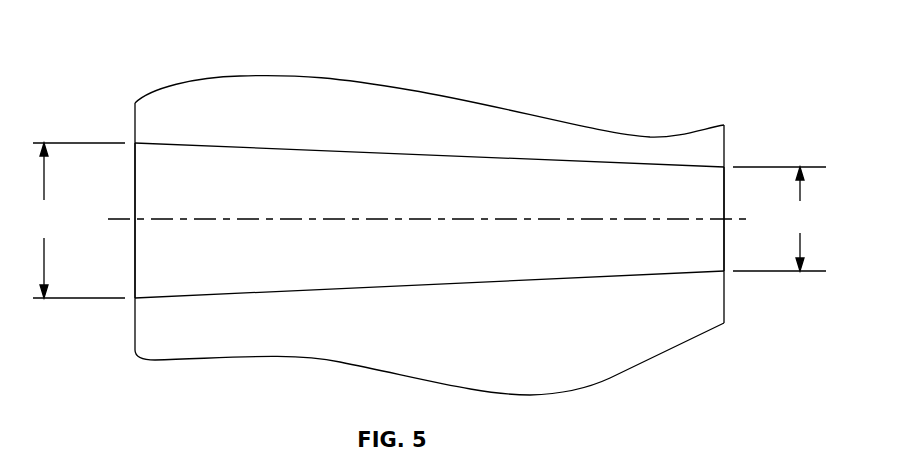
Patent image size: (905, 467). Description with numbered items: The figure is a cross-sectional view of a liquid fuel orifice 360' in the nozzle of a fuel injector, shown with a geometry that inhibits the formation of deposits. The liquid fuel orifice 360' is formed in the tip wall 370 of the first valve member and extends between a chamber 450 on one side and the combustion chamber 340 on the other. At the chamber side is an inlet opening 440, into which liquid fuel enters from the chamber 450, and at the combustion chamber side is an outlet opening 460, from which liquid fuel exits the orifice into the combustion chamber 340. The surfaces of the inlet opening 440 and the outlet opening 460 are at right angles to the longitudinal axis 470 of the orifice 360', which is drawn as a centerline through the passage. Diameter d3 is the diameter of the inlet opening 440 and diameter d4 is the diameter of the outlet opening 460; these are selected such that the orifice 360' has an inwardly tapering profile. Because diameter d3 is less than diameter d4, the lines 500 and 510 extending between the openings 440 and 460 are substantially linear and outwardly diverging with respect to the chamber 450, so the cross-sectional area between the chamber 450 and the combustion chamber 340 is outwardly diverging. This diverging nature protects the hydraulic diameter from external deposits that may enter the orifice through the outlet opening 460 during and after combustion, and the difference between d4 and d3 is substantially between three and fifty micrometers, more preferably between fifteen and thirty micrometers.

The combustion chamber 340 is at (88, 270).
The liquid fuel orifice 360' is at (338, 257).
The tip wall 370 is at (290, 117).
The inlet opening 440 is at (725, 200).
The chamber 450 is at (728, 257).
The outlet opening 460 is at (135, 175).
The longitudinal axis 470 is at (210, 219).
The line 500 is at (418, 283).
The line 510 is at (315, 150).
The diameter of inlet opening d3 is at (779, 219).
The diameter of outlet opening d4 is at (78, 220).